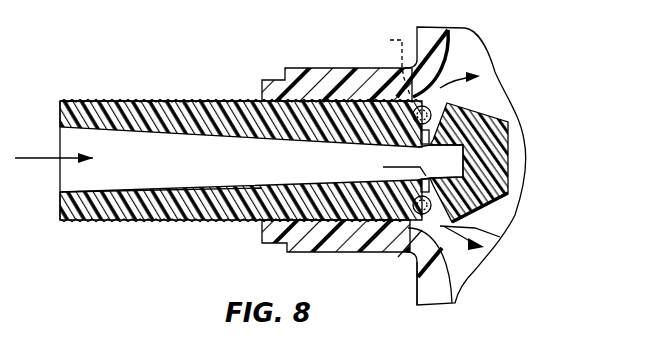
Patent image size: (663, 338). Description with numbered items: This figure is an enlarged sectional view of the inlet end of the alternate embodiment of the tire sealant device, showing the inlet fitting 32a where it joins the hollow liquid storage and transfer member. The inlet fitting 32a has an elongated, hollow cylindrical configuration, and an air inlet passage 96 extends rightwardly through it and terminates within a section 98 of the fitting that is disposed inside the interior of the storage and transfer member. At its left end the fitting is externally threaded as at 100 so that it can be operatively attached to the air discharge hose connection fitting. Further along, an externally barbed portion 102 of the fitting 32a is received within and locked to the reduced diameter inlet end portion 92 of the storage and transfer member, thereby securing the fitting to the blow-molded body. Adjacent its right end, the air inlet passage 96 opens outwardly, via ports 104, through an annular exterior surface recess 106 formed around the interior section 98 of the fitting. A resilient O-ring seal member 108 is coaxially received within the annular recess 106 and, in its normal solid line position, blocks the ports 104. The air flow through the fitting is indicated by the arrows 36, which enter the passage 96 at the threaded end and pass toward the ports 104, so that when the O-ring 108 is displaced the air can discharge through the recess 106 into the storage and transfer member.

The inlet fitting 32a is at (160, 92).
The fluid flow 36 is at (40, 158).
The inlet end portion 92 is at (326, 68).
The air inlet passage 96 is at (108, 190).
The section of the fitting 98 is at (522, 128).
The externally threaded portion 100 is at (104, 100).
The externally barbed portion 102 is at (338, 212).
The ports 104 is at (448, 104).
The annular exterior surface recess 106 is at (415, 255).
The resilient O-ring seal member 108 is at (518, 82).